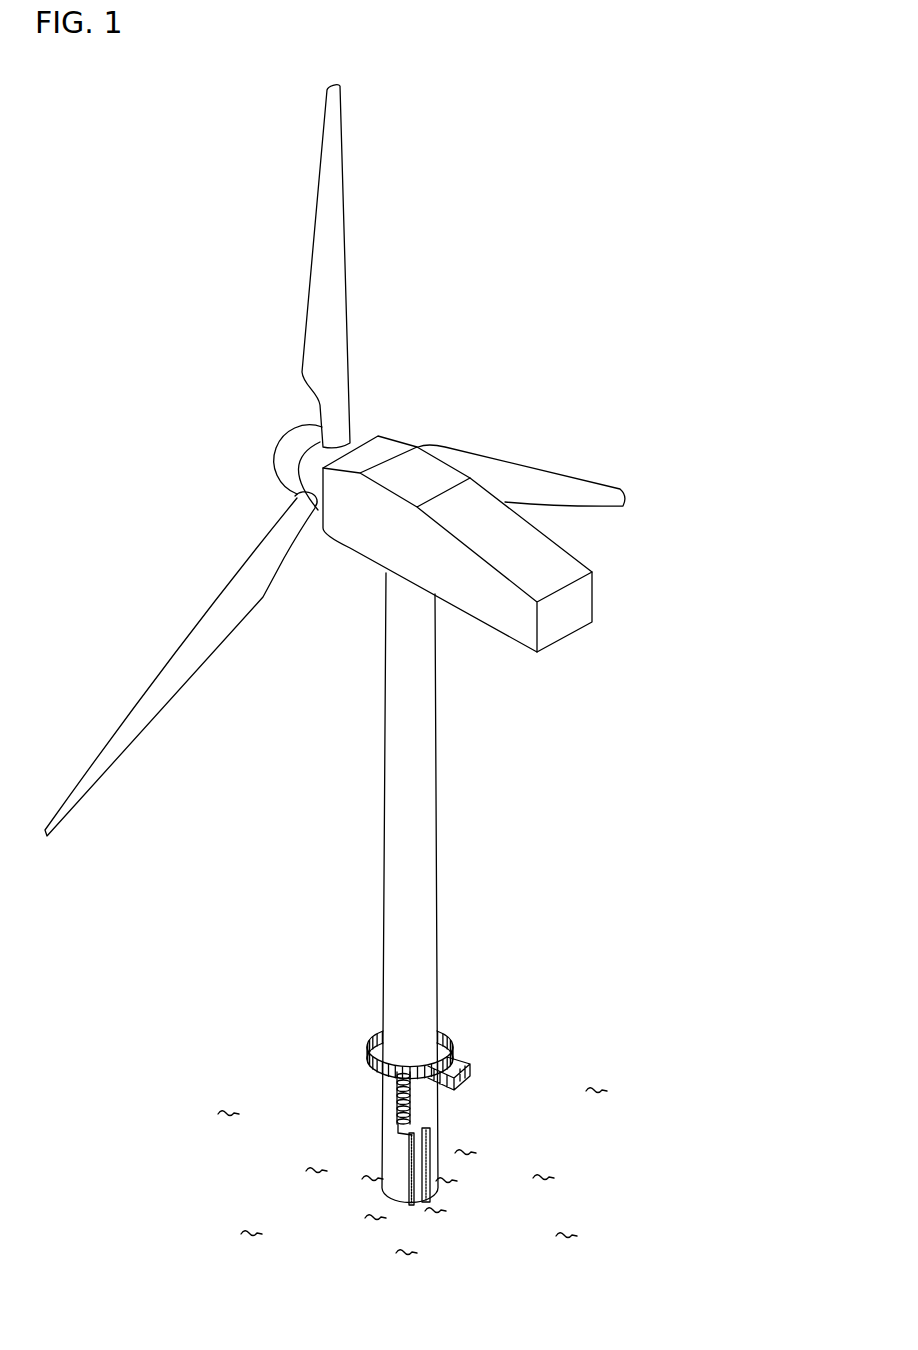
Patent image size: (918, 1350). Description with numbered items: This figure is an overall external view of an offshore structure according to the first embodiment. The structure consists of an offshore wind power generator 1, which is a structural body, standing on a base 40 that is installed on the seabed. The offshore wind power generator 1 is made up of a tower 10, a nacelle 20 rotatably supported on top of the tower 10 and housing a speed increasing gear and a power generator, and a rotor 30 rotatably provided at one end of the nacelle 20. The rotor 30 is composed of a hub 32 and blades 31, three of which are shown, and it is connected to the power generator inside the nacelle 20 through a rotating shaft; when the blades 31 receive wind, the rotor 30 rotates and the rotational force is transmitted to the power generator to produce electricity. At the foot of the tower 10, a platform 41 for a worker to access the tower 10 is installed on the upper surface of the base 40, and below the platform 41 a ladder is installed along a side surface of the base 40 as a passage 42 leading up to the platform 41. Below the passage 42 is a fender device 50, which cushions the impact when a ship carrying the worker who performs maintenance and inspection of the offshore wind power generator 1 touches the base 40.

The offshore wind power generator 1 is at (415, 380).
The tower 10 is at (428, 830).
The nacelle 20 is at (575, 567).
The rotor 30 is at (200, 472).
The blade 31 is at (333, 170).
The hub 32 is at (287, 448).
The base 40 is at (390, 1097).
The platform 41 is at (453, 1044).
The passage 42 is at (418, 1099).
The fender device 50 is at (405, 1164).